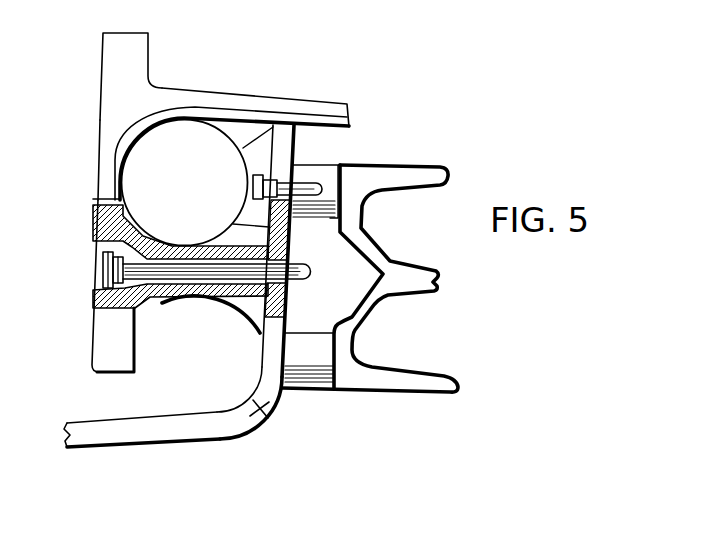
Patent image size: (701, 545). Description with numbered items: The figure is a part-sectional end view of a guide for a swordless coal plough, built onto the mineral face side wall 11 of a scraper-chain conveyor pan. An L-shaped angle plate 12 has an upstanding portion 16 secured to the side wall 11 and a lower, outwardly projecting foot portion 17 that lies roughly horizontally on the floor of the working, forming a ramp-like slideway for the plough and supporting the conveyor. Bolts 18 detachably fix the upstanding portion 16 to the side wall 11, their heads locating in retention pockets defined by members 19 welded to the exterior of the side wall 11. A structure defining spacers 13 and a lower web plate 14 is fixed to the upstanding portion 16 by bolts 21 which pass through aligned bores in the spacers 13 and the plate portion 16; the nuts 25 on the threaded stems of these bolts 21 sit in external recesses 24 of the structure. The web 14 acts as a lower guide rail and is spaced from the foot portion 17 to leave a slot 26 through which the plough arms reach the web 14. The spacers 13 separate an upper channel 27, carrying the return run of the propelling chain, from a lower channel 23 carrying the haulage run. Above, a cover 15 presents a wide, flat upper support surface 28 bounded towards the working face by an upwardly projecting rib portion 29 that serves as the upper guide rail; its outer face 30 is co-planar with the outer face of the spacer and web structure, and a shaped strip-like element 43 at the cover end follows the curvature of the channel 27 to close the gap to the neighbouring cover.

The mineral face side wall 11 is at (394, 180).
The L-shaped angle plate 12 is at (262, 408).
The spacer 13 is at (161, 302).
The web plate 14 is at (105, 323).
The cover 15 is at (118, 118).
The upstanding portion 16 is at (288, 327).
The foot portion 17 is at (151, 431).
The bolt 18 is at (304, 186).
The retention pocket member 19 is at (318, 219).
The bolt 21 is at (205, 268).
The lower channel 23 is at (194, 377).
The external recess 24 is at (94, 246).
The nut 25 is at (102, 268).
The slot 26 is at (117, 397).
The upper channel 27 is at (194, 177).
The upper support surface 28 is at (244, 93).
The rib portion 29 is at (140, 52).
The outer face 30 is at (102, 60).
The strip-like element 43 is at (256, 116).